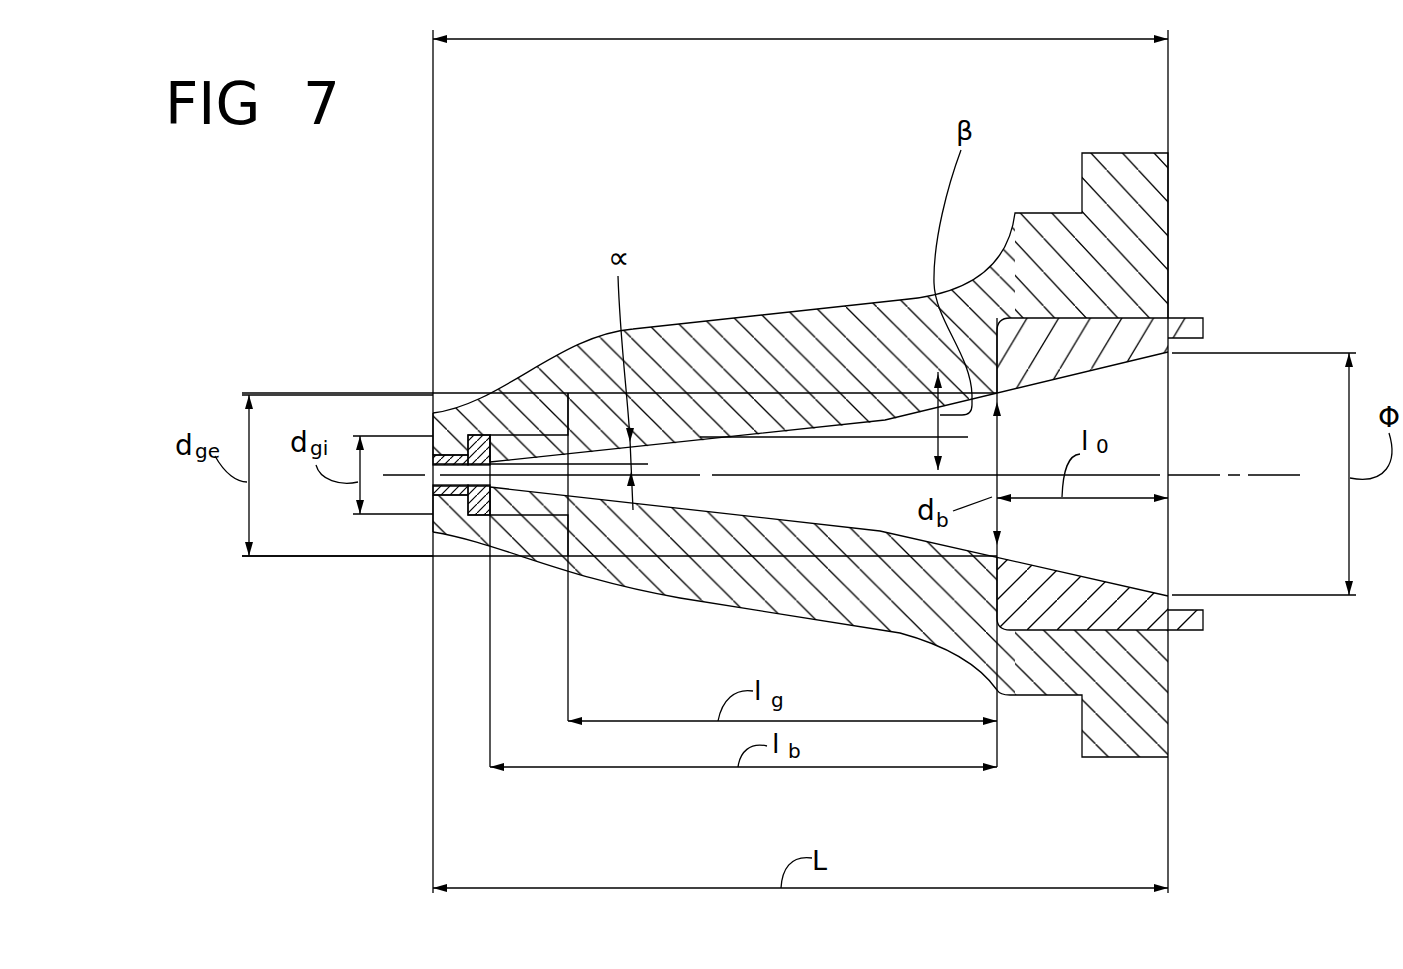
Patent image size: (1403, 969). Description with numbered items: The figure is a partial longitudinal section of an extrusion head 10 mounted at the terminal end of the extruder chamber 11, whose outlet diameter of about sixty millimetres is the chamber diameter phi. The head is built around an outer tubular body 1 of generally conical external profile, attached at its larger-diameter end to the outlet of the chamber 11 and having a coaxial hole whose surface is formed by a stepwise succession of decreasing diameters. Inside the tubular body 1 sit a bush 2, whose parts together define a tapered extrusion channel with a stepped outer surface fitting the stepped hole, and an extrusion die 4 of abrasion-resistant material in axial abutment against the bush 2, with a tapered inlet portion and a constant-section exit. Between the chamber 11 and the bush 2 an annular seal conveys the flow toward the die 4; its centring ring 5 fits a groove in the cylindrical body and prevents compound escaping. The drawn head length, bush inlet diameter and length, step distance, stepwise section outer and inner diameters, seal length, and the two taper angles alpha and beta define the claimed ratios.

The outer tubular body 1 is at (903, 296).
The bush 2 is at (660, 459).
The extrusion die 4 is at (488, 400).
The centring ring 5 is at (1147, 333).
The extrusion head 10 is at (753, 39).
The chamber 11 is at (1285, 348).